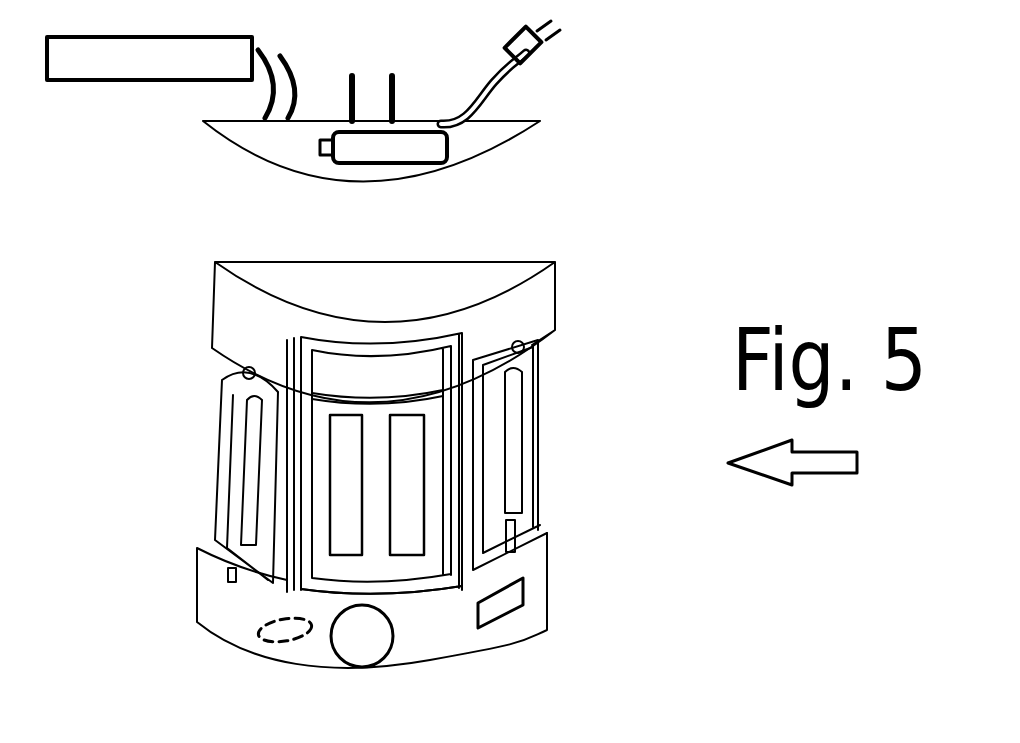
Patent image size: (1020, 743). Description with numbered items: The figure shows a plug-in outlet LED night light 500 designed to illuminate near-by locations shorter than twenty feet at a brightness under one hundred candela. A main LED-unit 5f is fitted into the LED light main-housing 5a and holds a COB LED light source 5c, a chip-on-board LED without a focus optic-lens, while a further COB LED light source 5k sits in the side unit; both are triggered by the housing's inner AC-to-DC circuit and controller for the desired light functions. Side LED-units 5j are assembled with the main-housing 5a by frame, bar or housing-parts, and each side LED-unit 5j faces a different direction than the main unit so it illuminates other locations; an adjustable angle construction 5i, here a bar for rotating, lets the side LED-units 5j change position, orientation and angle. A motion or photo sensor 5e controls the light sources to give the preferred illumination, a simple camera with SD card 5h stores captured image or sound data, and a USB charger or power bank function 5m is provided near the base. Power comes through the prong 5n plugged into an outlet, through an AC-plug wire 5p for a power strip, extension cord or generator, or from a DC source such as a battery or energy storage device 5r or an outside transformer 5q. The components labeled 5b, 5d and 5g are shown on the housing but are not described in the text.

The LED night light 500 is at (843, 464).
The LED light main-housing 5a is at (528, 293).
The lower base 5b is at (530, 565).
The COB LED light source 5c is at (408, 433).
The left sensor slot 5d is at (335, 398).
The motion sensor / photo sensor 5e is at (327, 363).
The main LED-unit 5f is at (405, 573).
The CdS light sensor 5g is at (275, 630).
The camera with SD card 5h is at (375, 650).
The adjustable angle construction 5i is at (250, 362).
The side LED-unit 5j is at (227, 413).
The COB LED light source 5k is at (238, 498).
The USB charger or power bank function 5m is at (503, 607).
The prong 5n is at (397, 97).
The AC-plug wire 5p is at (555, 52).
The transformer 5q is at (172, 80).
The DC power source 5r is at (448, 143).